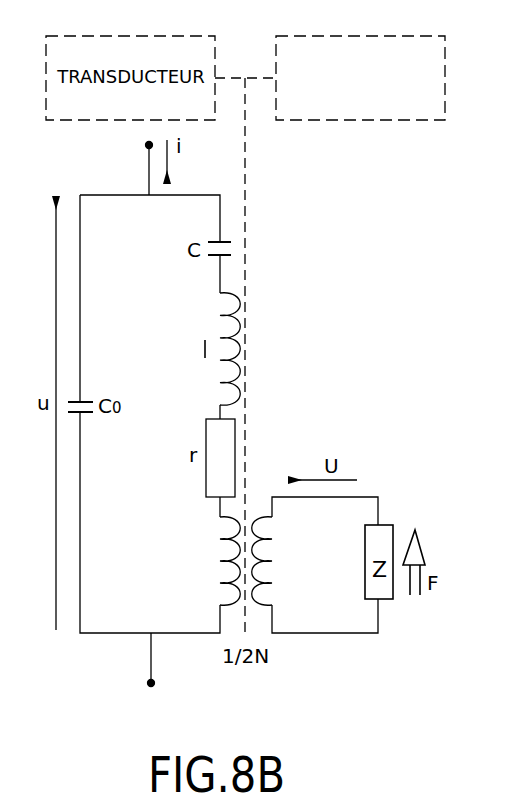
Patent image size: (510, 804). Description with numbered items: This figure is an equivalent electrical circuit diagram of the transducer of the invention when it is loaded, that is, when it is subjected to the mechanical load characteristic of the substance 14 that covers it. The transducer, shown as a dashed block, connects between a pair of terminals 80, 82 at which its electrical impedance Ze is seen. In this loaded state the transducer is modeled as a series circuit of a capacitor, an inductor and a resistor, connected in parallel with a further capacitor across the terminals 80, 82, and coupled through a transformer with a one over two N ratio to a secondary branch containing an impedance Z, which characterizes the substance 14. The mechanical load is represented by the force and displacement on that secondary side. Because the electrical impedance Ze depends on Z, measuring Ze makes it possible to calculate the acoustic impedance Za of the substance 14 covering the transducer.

The substance 14 is at (418, 88).
The first terminal of the transducer 80 is at (149, 145).
The second terminal of the transducer 82 is at (151, 683).